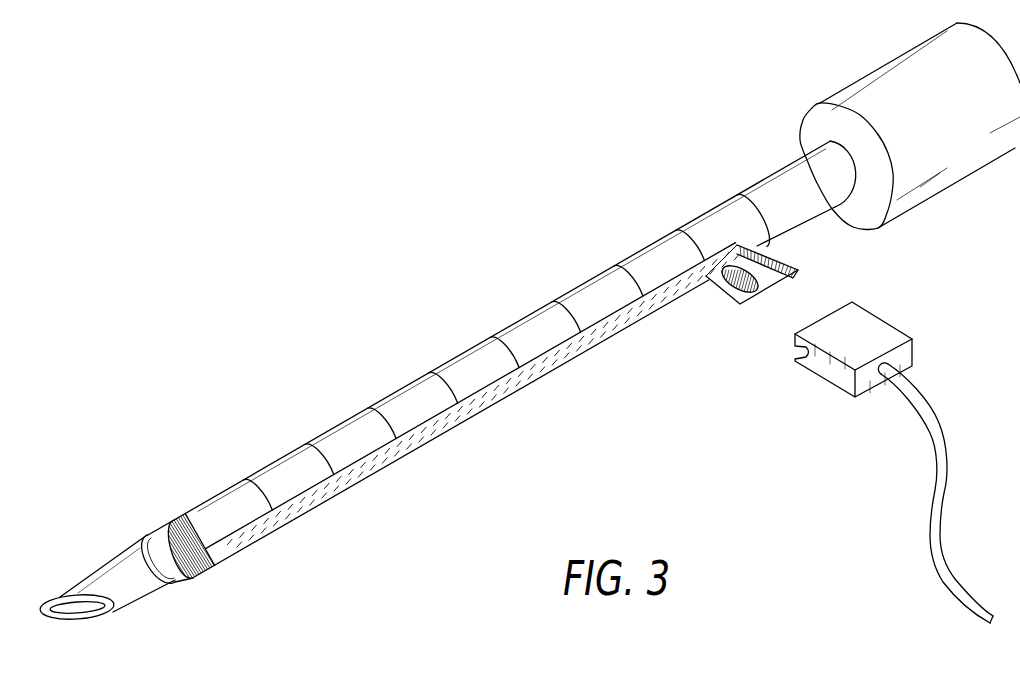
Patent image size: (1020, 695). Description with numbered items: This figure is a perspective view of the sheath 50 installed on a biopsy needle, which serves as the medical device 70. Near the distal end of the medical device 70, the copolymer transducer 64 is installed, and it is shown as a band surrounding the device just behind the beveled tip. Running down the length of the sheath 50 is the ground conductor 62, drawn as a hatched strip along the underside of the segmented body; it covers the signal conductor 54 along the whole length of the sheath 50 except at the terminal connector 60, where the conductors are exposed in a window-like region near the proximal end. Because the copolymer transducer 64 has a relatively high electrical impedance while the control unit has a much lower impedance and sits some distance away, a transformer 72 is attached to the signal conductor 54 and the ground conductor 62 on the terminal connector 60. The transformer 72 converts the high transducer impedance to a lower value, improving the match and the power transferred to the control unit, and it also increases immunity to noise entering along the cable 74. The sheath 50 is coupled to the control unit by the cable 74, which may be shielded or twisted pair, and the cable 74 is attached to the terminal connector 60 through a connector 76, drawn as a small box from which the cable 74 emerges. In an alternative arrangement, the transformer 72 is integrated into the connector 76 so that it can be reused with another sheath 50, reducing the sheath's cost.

The sheath 50 is at (325, 378).
The signal conductor 54 is at (760, 292).
The terminal connector 60 is at (707, 290).
The ground conductor 62 is at (435, 433).
The copolymer transducer 64 is at (207, 565).
The medical device 70 is at (143, 588).
The transformer 72 is at (723, 287).
The cable 74 is at (937, 558).
The connector 76 is at (880, 328).